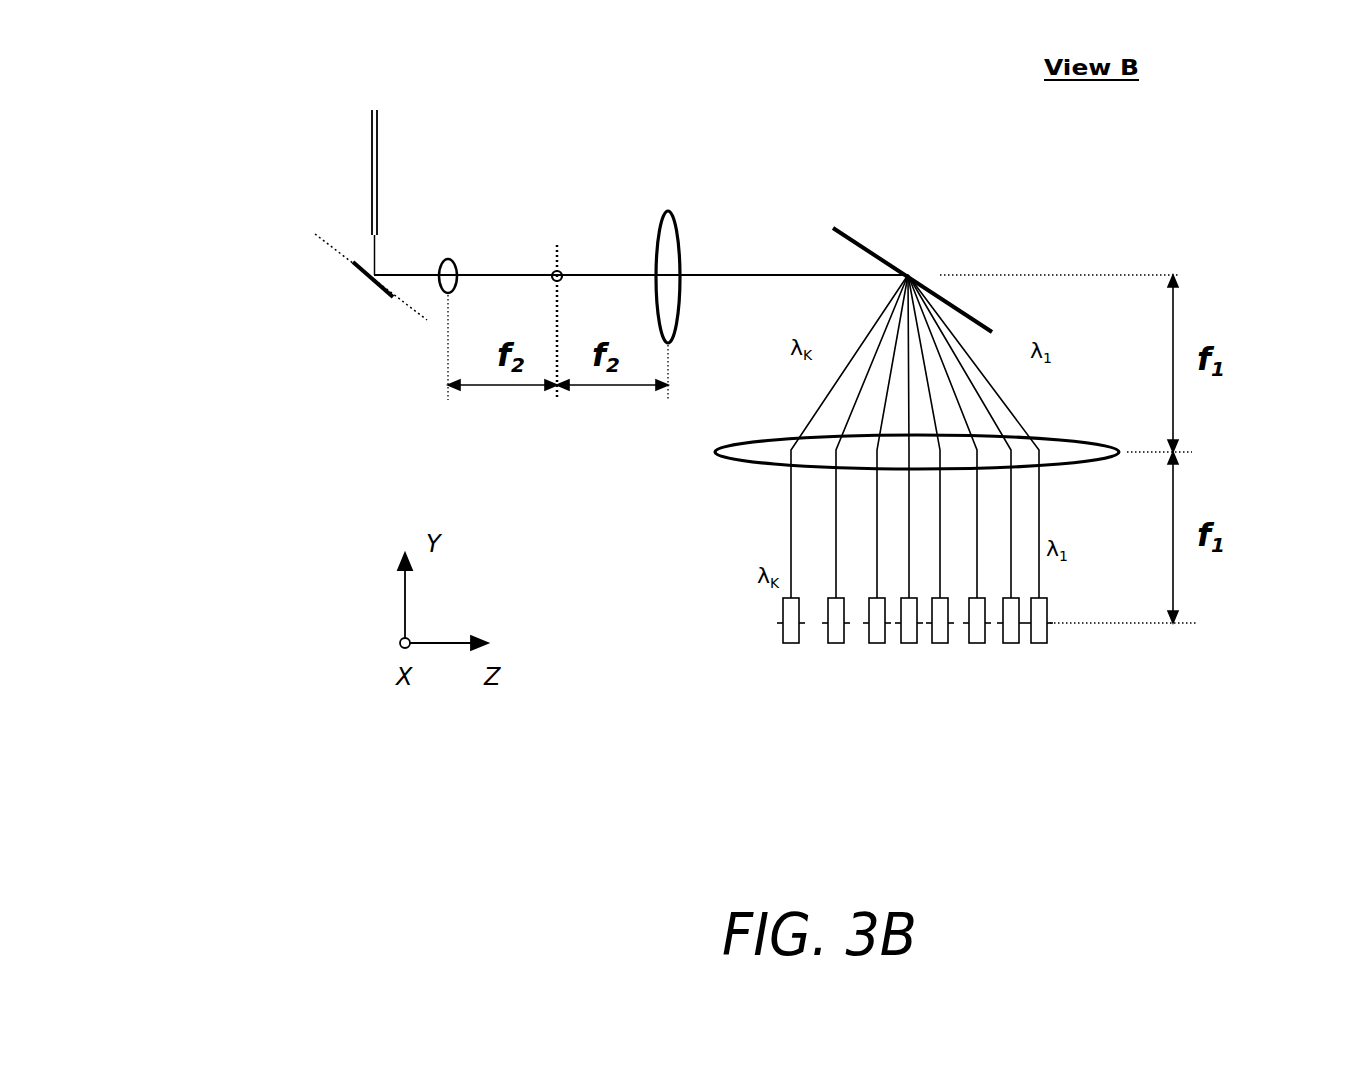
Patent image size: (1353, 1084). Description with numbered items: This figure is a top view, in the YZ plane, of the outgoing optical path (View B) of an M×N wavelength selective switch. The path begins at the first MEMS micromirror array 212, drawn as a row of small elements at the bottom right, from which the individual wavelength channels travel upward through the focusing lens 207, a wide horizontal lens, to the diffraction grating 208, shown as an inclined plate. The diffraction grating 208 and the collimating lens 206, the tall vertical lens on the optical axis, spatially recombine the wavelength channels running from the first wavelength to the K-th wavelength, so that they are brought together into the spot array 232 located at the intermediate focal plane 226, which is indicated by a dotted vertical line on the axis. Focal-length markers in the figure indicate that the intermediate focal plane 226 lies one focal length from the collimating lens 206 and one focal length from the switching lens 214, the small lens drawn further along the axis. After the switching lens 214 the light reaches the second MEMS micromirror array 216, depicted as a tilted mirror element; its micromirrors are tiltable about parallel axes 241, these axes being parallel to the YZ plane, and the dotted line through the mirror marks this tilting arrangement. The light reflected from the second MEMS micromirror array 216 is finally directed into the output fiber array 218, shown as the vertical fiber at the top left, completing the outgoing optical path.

The output fiber array 218 is at (370, 140).
The second MEMS micromirror array 216 is at (355, 265).
The parallel axes 241 is at (410, 313).
The switching lens 214 is at (450, 262).
The intermediate focal plane 226 is at (553, 247).
The spot array 232 is at (560, 272).
The collimating lens 206 is at (672, 213).
The diffraction grating 208 is at (860, 240).
The focusing lens 207 is at (750, 467).
The first MEMS micromirror array 212 is at (1063, 652).